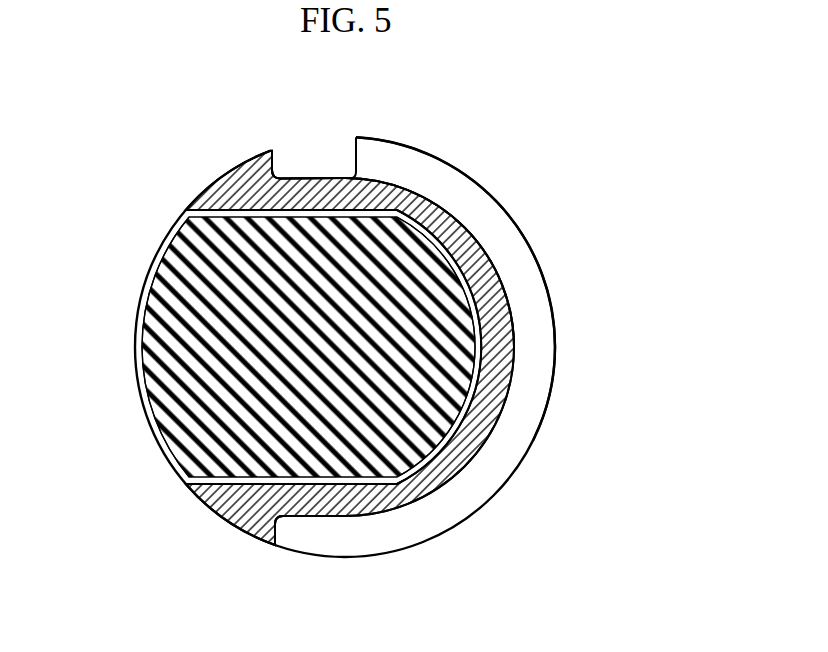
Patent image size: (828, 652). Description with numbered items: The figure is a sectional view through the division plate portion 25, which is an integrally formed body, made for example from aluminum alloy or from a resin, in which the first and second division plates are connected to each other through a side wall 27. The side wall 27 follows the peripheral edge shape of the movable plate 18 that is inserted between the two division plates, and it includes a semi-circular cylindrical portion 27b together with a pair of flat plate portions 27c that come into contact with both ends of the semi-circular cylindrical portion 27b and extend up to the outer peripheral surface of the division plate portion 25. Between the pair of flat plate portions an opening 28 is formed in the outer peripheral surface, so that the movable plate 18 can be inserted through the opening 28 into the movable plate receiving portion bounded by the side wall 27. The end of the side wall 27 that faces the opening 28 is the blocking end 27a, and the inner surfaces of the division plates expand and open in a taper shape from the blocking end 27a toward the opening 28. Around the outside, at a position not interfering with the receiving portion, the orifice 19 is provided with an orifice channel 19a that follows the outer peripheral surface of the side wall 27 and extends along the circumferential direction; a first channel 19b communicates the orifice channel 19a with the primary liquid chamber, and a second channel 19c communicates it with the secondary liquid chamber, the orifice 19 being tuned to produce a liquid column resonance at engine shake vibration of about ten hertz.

The movable plate 18 is at (160, 406).
The orifice 19 is at (528, 325).
The orifice channel 19a is at (483, 221).
The first channel 19b is at (272, 538).
The second channel 19c is at (277, 163).
The division plate portion 25 is at (452, 535).
The side wall 27 is at (467, 442).
The blocking end 27a is at (481, 325).
The semi-circular cylindrical portion 27b is at (490, 272).
The flat plate portions 27c is at (305, 178).
The opening 28 is at (218, 212).